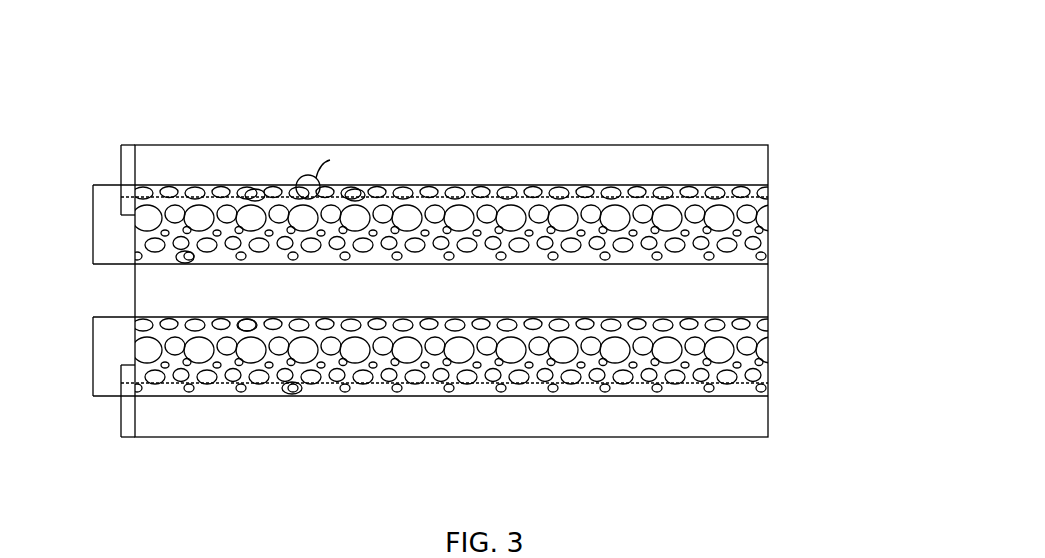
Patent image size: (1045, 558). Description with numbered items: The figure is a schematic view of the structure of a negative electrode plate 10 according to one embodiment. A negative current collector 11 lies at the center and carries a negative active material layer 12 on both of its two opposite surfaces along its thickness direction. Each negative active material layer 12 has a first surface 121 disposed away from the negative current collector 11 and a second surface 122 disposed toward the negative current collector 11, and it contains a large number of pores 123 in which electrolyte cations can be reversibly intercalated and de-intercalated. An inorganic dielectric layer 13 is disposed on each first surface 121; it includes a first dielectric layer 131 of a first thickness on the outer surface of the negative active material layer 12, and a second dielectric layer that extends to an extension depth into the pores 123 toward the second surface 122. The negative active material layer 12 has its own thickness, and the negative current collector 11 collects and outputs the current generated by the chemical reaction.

The negative electrode plate 10 is at (488, 249).
The negative current collector 11 is at (768, 290).
The negative active material layer 12 is at (524, 298).
The inorganic dielectric layer 13 is at (127, 133).
The first surface 121 is at (255, 187).
The second surface 122 is at (185, 265).
The pores 123 is at (355, 190).
The first dielectric layer 131 is at (768, 158).